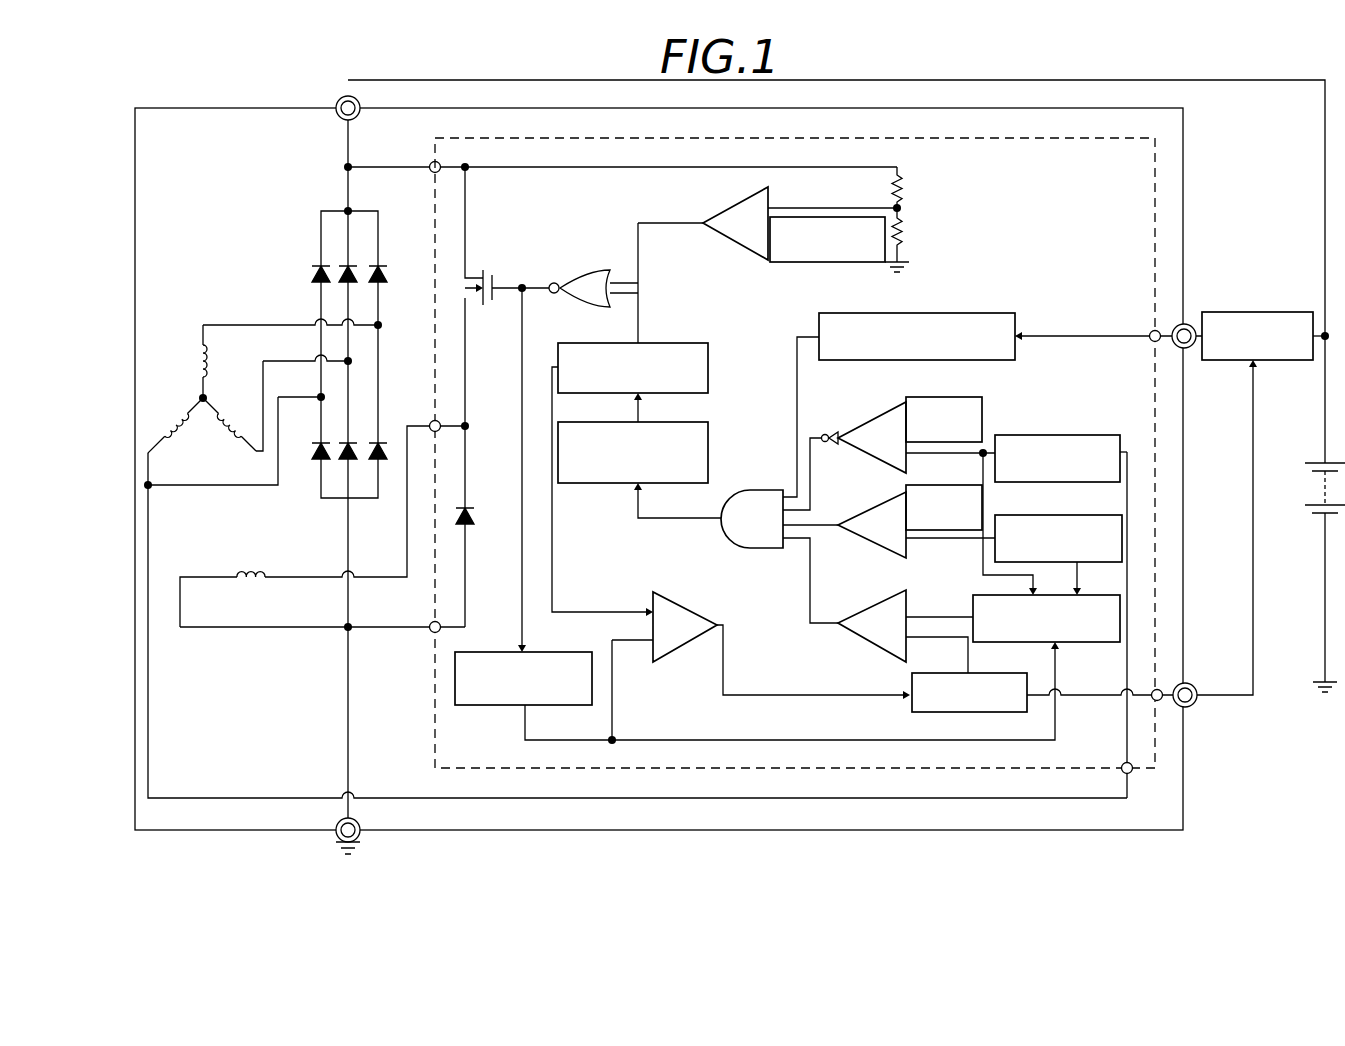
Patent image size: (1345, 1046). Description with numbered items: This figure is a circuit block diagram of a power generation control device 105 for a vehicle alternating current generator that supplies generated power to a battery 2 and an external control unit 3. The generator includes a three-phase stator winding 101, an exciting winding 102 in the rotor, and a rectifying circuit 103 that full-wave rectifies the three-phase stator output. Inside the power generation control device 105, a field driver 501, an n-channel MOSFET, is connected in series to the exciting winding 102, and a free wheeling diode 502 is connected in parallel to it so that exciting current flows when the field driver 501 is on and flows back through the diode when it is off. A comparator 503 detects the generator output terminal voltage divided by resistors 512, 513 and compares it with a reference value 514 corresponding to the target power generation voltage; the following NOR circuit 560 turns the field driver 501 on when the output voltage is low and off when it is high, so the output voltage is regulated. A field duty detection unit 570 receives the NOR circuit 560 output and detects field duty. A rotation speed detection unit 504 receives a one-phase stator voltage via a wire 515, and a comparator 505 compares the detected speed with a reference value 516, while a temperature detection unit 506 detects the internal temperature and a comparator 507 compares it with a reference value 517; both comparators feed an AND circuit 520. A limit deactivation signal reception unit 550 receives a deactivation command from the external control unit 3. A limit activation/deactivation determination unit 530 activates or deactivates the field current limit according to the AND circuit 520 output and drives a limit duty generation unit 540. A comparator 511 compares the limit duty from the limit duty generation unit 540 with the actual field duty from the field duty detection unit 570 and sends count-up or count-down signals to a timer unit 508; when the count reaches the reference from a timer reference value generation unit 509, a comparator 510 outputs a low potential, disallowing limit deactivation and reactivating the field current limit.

The battery 2 is at (1312, 462).
The external control unit 3 is at (1260, 312).
The stator winding 101 is at (200, 343).
The exciting winding 102 is at (245, 572).
The rectifying circuit 103 is at (320, 210).
The power generation control device 105 is at (512, 138).
The field driver 501 is at (493, 275).
The free wheeling diode 502 is at (470, 507).
The comparator 503 is at (725, 212).
The rotation speed detection unit 504 is at (1080, 435).
The comparator 505 is at (870, 421).
The temperature detection unit 506 is at (1063, 515).
The comparator 507 is at (870, 505).
The timer unit 508 is at (995, 663).
The timer reference value generation unit 509 is at (1052, 585).
The comparator 510 is at (870, 608).
The comparator 511 is at (698, 610).
The resistor 512 is at (905, 190).
The resistor 513 is at (905, 243).
The reference value 514 is at (838, 262).
The wire 515 is at (150, 732).
The reference value 516 is at (985, 410).
The reference value 517 is at (950, 530).
The AND circuit 520 is at (718, 535).
The limit activation/deactivation determination unit 530 is at (708, 447).
The limit duty generation unit 540 is at (680, 343).
The limit deactivation signal reception unit 550 is at (995, 313).
The NOR circuit 560 is at (583, 270).
The field duty detection unit 570 is at (545, 652).